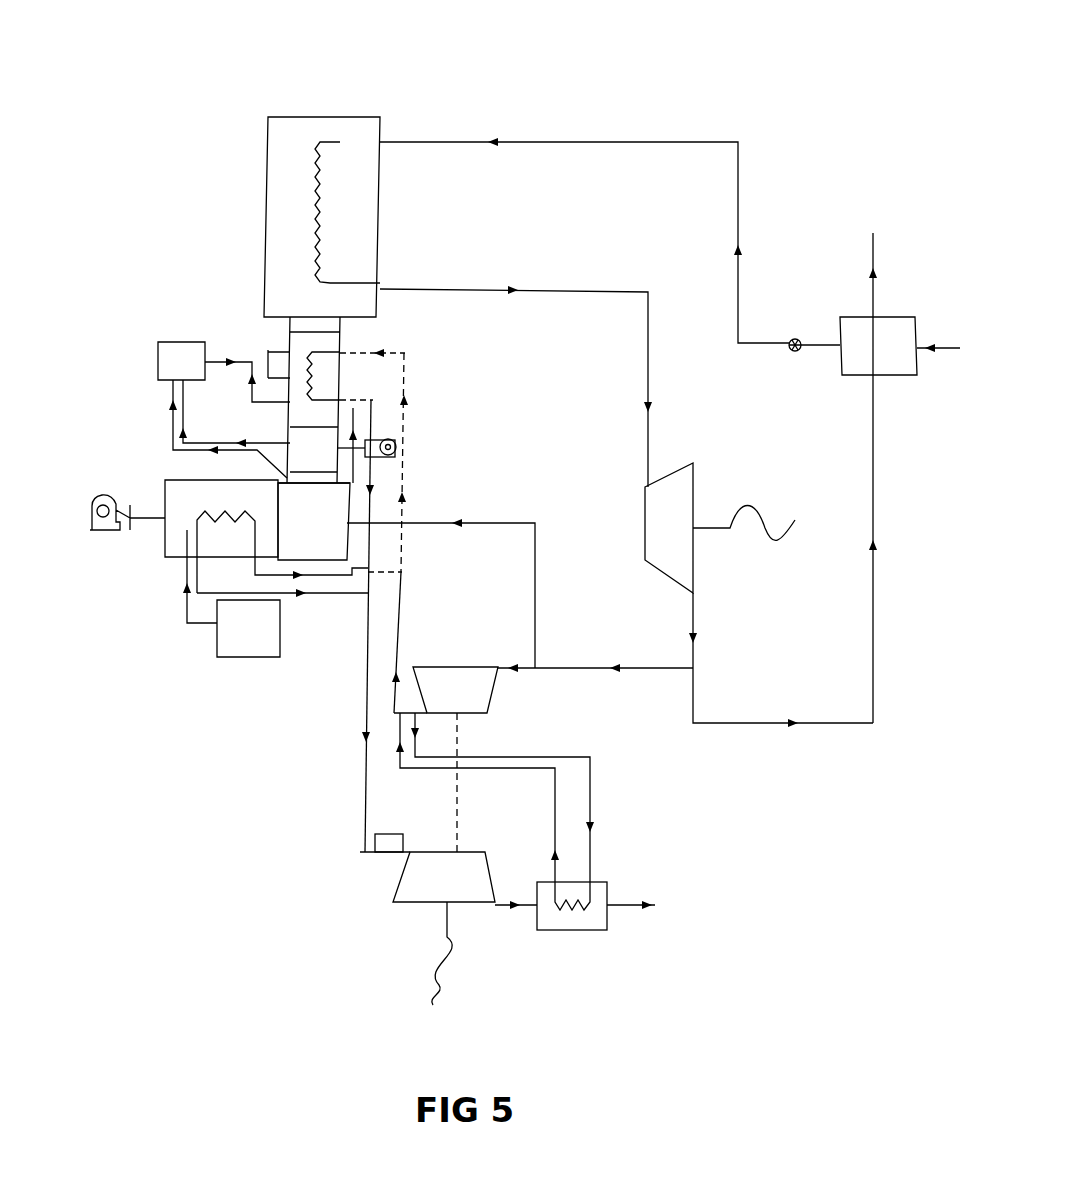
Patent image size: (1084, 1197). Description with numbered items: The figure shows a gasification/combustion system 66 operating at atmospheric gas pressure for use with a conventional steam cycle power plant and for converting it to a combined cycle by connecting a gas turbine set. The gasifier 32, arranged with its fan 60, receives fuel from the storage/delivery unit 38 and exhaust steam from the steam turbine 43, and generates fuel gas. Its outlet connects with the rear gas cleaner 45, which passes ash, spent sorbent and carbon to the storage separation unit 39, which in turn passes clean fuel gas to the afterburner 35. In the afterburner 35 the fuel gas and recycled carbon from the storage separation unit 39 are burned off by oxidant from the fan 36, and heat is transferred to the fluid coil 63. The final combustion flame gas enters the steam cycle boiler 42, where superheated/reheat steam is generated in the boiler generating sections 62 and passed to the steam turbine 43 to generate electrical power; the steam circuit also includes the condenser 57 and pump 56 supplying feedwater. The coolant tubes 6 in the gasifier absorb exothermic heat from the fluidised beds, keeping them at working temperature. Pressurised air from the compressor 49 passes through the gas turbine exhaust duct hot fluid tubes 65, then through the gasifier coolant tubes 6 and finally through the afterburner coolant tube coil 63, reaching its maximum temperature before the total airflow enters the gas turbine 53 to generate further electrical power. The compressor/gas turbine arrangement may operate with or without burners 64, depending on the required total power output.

The gasification/combustion system 66 is at (475, 27).
The steam cycle boiler 42 is at (348, 112).
The boiler generating sections 62 is at (300, 212).
The afterburner 35 is at (350, 340).
The afterburner coolant tube coil 63 is at (326, 378).
The storage separation unit 39 is at (208, 340).
The rear gas cleaner 45 is at (288, 432).
The fan 36 is at (406, 441).
The gasifier 32 is at (162, 490).
The gasifier coolant tubes 6 is at (223, 502).
The fan 60 is at (116, 543).
The storage/delivery unit 38 is at (255, 662).
The steam turbine 43 is at (700, 491).
The pump 56 is at (798, 340).
The condenser 57 is at (920, 322).
The compressor 49 is at (496, 716).
The burners 64 is at (388, 828).
The gas turbine 53 is at (474, 847).
The gas turbine exhaust duct hot fluid tubes 65 is at (576, 922).